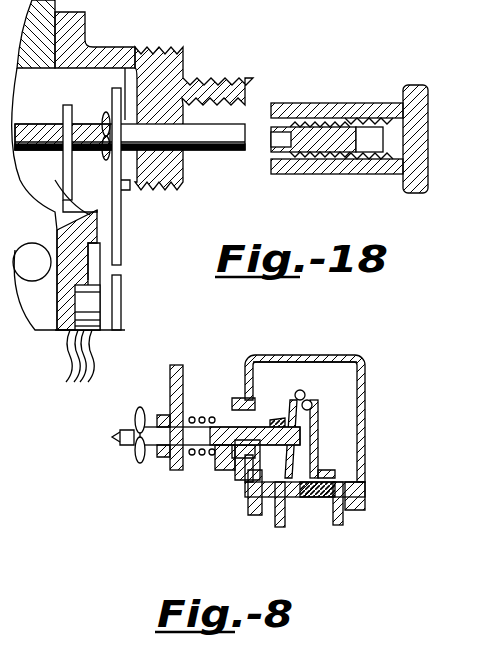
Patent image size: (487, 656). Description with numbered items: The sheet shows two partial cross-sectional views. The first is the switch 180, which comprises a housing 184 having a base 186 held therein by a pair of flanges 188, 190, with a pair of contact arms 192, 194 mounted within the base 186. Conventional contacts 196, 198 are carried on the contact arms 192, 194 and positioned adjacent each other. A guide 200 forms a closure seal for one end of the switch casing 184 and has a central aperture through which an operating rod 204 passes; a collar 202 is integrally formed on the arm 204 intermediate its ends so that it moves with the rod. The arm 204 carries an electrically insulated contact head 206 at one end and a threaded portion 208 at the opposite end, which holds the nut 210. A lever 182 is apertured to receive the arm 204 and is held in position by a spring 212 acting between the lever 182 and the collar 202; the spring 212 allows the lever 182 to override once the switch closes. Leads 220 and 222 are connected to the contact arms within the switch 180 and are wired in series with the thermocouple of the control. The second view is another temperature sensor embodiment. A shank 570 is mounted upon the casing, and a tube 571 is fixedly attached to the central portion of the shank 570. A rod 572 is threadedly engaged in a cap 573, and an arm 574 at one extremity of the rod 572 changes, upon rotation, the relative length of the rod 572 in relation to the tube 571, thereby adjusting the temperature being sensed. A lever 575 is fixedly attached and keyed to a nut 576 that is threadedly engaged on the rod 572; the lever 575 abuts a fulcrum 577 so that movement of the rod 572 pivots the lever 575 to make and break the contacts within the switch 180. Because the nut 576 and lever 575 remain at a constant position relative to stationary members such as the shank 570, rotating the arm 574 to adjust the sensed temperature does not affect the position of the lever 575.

In FIG. 18, the shank 570 is at (185, 62).
In FIG. 18, the tube 571 is at (308, 103).
In FIG. 18, the rod 572 is at (258, 110).
In FIG. 18, the cap 573 is at (428, 92).
In FIG. 18, the arm 574 is at (62, 170).
In FIG. 18, the lever 575 is at (121, 252).
In FIG. 18, the nut 576 is at (105, 110).
In FIG. 18, the fulcrum 577 is at (126, 186).
In FIG. 18, the operating rod 204 is at (100, 300).
In FIG. 8, the operating rod 204 is at (158, 448).
In FIG. 18, the switch 180 is at (102, 332).
In FIG. 8, the switch 180 is at (278, 352).
In FIG. 18, the lead 220 is at (68, 362).
In FIG. 8, the lead 220 is at (336, 526).
In FIG. 18, the lead 222 is at (88, 362).
In FIG. 8, the lead 222 is at (274, 528).
In FIG. 8, the lever 182 is at (190, 370).
In FIG. 8, the housing 184 is at (366, 405).
In FIG. 8, the base 186 is at (292, 505).
In FIG. 8, the flange 188 is at (262, 514).
In FIG. 8, the flange 190 is at (350, 510).
In FIG. 8, the contact arm 192 is at (293, 398).
In FIG. 8, the contact arm 194 is at (318, 424).
In FIG. 8, the contact 196 is at (300, 390).
In FIG. 8, the contact 198 is at (310, 402).
In FIG. 8, the guide 200 is at (250, 478).
In FIG. 8, the collar 202 is at (222, 470).
In FIG. 8, the contact head 206 is at (259, 427).
In FIG. 8, the threaded portion 208 is at (122, 446).
In FIG. 8, the nut 210 is at (140, 407).
In FIG. 8, the spring 212 is at (208, 414).